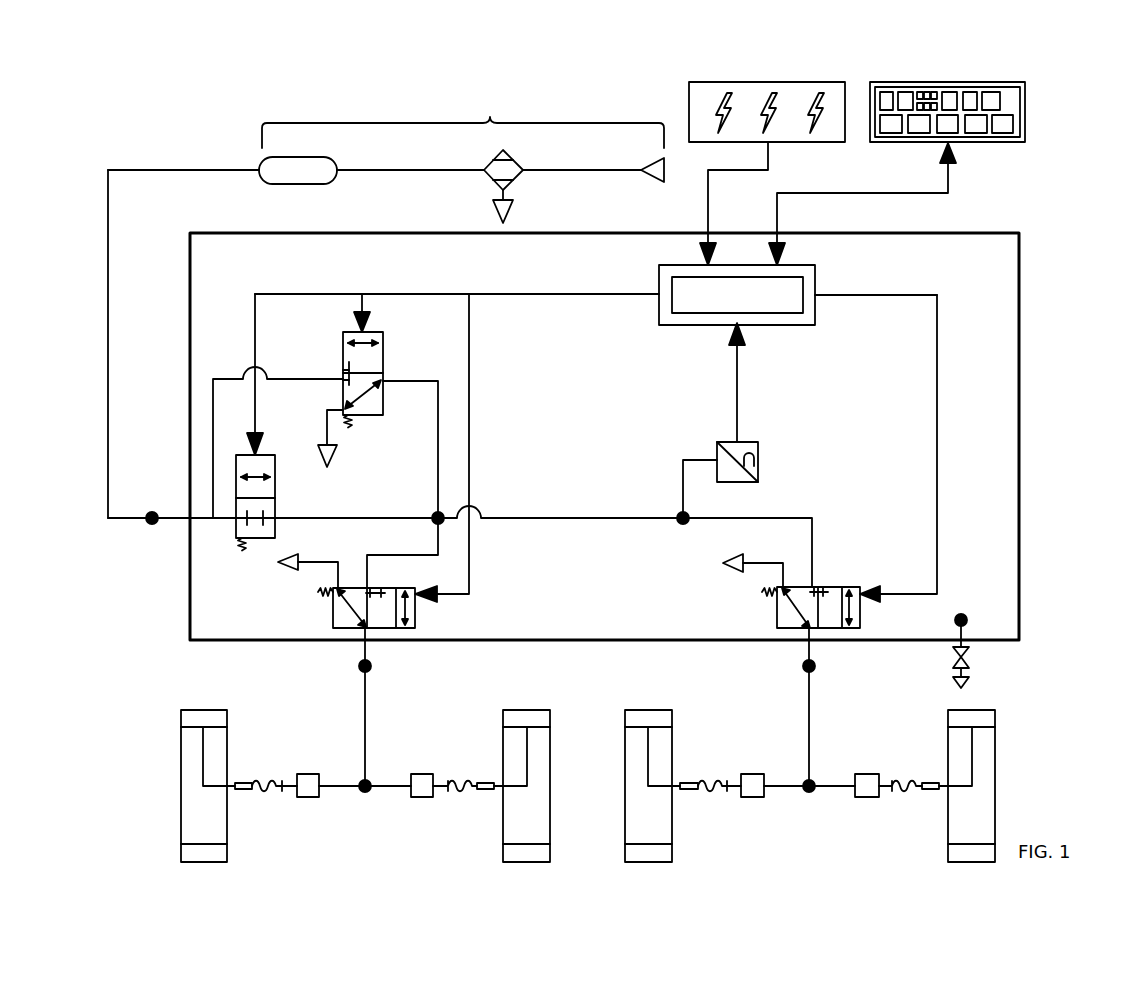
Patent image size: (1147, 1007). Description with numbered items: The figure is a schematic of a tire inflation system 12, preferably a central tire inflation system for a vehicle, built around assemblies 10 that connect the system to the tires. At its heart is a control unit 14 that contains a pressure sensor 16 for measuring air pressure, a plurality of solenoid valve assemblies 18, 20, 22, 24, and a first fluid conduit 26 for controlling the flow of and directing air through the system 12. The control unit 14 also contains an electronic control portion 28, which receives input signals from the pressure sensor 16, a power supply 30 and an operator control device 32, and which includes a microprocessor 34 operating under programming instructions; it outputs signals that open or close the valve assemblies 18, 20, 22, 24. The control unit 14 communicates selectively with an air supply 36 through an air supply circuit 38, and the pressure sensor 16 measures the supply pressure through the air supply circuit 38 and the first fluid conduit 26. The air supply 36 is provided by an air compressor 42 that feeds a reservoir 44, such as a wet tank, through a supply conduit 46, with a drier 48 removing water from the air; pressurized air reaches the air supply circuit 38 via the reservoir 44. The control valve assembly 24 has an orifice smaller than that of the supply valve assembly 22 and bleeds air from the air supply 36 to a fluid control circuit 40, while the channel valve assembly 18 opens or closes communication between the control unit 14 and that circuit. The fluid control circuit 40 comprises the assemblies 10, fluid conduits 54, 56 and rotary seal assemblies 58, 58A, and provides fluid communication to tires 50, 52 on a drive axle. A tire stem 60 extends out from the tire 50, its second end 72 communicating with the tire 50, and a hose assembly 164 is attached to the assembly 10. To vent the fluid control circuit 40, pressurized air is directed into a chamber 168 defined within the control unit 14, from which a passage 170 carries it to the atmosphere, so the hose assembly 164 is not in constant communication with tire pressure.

The assembly 10 is at (237, 783).
The tire inflation system 12 is at (1038, 188).
The control unit 14 is at (1005, 286).
The pressure sensor 16 is at (717, 445).
The channel valve assembly 18 is at (333, 608).
The valve assembly 20 is at (777, 608).
The supply valve assembly 22 is at (279, 456).
The control valve assembly 24 is at (383, 405).
The first fluid conduit 26 is at (578, 515).
The electronic control portion 28 is at (659, 275).
The power supply 30 is at (768, 82).
The operator control device 32 is at (948, 82).
The microprocessor 34 is at (810, 280).
The air supply 36 is at (463, 121).
The air supply circuit 38 is at (108, 343).
The fluid control circuit 40 is at (363, 705).
The air compressor 42 is at (642, 173).
The reservoir 44 is at (297, 184).
The supply conduit 46 is at (412, 172).
The drier 48 is at (515, 180).
The tire 50 is at (193, 710).
The tire 52 is at (538, 710).
The fluid conduit 54 is at (362, 632).
The fluid conduit 56 is at (367, 725).
The rotary seal assembly 58 is at (302, 797).
The rotary seal assembly 58A is at (425, 797).
The tire stem 60 is at (230, 790).
The second end of tire stem 72 is at (203, 738).
The hose assembly 164 is at (275, 790).
The chamber 168 is at (583, 385).
The passage 170 is at (965, 621).